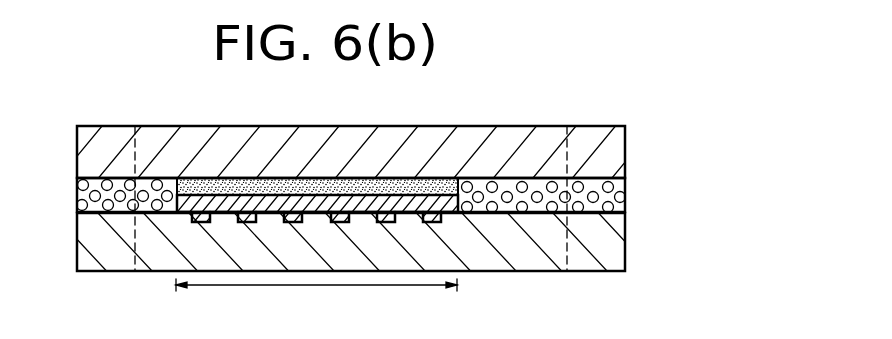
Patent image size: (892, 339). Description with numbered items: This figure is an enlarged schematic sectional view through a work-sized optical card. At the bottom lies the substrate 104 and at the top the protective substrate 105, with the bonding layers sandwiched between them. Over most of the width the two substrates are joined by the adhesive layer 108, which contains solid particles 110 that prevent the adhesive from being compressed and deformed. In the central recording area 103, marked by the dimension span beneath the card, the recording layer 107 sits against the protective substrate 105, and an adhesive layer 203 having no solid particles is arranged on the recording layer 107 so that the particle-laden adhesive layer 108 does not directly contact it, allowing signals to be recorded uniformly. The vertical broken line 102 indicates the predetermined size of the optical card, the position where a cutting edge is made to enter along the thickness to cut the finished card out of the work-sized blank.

The broken line 102 is at (571, 277).
The recording area 103 is at (315, 286).
The substrate 104 is at (625, 239).
The protective substrate 105 is at (625, 158).
The recording layer 107 is at (248, 126).
The adhesive layer 108 is at (364, 207).
The solid particles 110 is at (78, 185).
The adhesive layer having no solid particles 203 is at (438, 180).